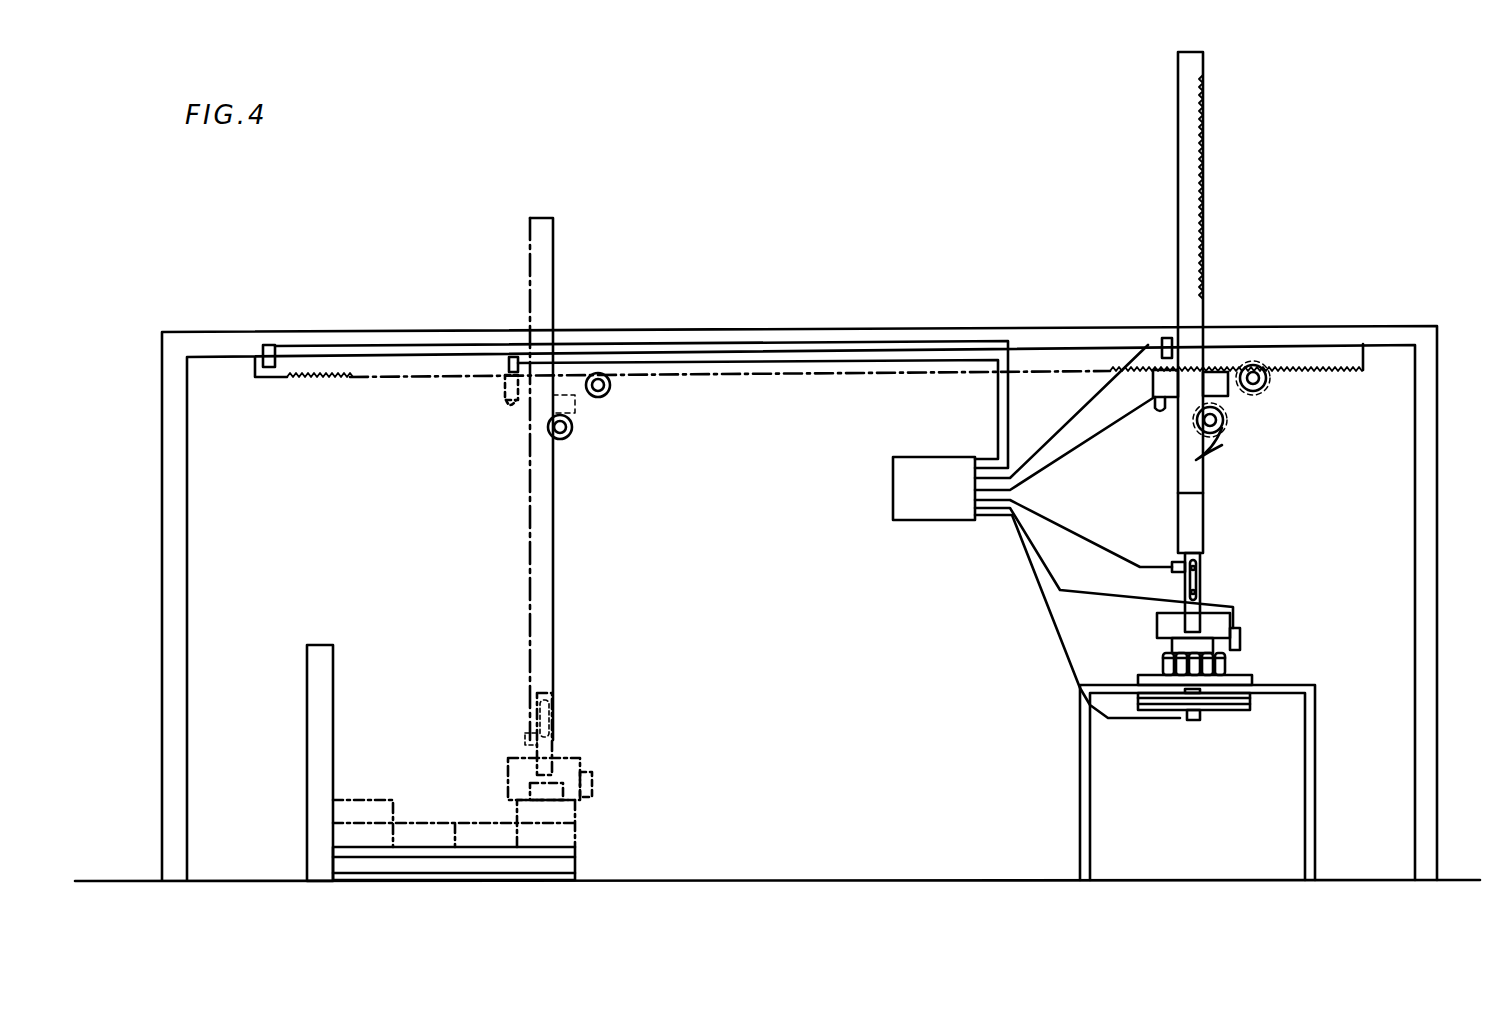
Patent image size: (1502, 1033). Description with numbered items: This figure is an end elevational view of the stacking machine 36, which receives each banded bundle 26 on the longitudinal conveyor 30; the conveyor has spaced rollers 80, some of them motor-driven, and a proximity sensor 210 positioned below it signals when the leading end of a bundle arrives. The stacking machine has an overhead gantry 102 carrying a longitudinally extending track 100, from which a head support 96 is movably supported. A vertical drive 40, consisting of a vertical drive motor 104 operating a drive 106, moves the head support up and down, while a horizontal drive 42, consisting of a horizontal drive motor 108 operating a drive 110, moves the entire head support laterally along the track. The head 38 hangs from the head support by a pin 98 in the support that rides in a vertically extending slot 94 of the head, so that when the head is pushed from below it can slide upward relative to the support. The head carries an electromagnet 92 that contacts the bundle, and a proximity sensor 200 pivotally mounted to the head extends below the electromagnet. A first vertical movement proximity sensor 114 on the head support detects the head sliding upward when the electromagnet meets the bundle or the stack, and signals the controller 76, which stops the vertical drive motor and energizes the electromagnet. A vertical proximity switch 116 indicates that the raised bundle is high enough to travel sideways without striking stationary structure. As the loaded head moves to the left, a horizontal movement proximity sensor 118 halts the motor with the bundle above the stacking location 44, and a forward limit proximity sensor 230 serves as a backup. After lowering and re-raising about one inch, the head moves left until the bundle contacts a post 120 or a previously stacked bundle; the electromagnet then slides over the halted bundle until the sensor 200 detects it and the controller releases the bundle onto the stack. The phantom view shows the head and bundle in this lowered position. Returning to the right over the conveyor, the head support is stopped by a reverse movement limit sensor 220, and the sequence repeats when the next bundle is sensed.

The bundle 26 is at (578, 805).
The longitudinal conveyor 30 is at (1090, 805).
The stacking machine 36 is at (787, 262).
The head 38 is at (1157, 627).
The vertical drive 40 is at (1230, 428).
The horizontal drive 42 is at (1276, 357).
The stacking location 44 is at (578, 860).
The controller 76 is at (893, 490).
The rollers 80 is at (1170, 712).
The electromagnet 92 is at (525, 792).
The slot 94 is at (553, 703).
The head support 96 is at (553, 675).
The pin 98 is at (553, 735).
The track 100 is at (1370, 360).
The overhead gantry 102 is at (1401, 326).
The vertical drive motor 104 is at (570, 437).
The drive 106 is at (1218, 448).
The horizontal drive motor 108 is at (612, 389).
The drive 110 is at (1243, 372).
The first vertical movement proximity sensor 114 is at (525, 738).
The vertical proximity switch 116 is at (505, 405).
The horizontal movement proximity sensor 118 is at (513, 357).
The post 120 is at (307, 655).
The proximity sensor 200 is at (593, 778).
The proximity sensor 210 is at (1200, 717).
The reverse movement limit sensor 220 is at (1167, 338).
The forward limit proximity sensor 230 is at (270, 345).